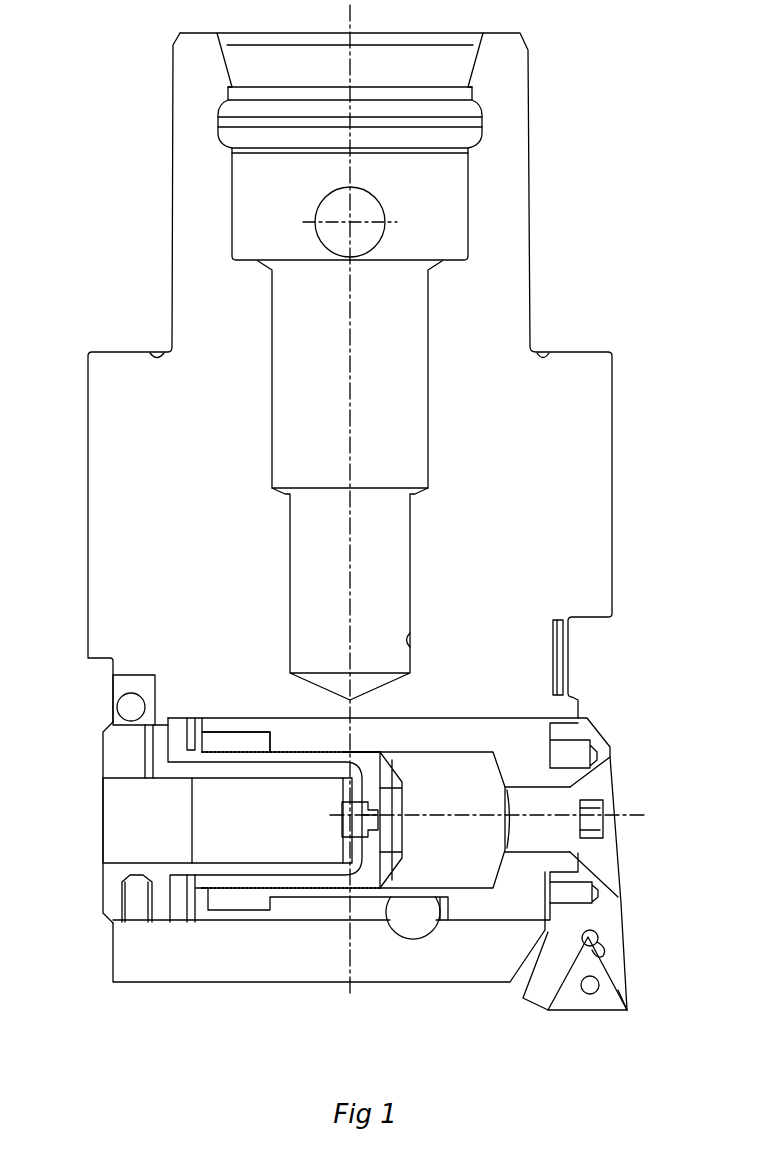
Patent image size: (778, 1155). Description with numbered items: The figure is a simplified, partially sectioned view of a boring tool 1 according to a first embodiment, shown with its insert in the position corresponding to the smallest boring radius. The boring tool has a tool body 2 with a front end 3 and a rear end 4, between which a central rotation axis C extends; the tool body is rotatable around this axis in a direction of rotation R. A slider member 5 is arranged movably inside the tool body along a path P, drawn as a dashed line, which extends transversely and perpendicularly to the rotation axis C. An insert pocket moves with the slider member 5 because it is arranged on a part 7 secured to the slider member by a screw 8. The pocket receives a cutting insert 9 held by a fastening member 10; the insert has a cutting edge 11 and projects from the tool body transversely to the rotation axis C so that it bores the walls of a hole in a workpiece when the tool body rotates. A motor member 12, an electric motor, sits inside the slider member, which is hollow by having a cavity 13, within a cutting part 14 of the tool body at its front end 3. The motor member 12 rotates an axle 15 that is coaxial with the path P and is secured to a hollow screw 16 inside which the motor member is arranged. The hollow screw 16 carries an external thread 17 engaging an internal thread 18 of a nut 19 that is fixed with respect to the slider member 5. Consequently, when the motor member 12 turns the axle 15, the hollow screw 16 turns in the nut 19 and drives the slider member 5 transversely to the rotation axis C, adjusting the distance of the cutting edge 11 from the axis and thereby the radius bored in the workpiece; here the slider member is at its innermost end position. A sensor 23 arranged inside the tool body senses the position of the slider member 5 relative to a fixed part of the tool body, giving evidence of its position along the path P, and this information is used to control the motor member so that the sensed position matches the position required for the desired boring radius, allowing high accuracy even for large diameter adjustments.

The boring tool 1 is at (538, 236).
The tool body 2 is at (538, 303).
The front end 3 is at (420, 984).
The rear end 4 is at (490, 33).
The slider member 5 is at (470, 732).
The part 7 is at (605, 924).
The screw 8 is at (595, 785).
The cutting insert 9 is at (569, 1003).
The fastening member 10 is at (597, 982).
The cutting edge 11 is at (627, 1006).
The motor member 12 is at (243, 783).
The cavity 13 is at (418, 760).
The cutting part 14 is at (94, 830).
The axle 15 is at (387, 821).
The hollow screw 16 is at (287, 897).
The external thread 17 is at (343, 750).
The internal thread 18 is at (258, 752).
The nut 19 is at (240, 732).
The sensor 23 is at (433, 935).
The central rotation axis C is at (350, 399).
The direction of rotation R is at (337, 600).
The path P is at (622, 812).